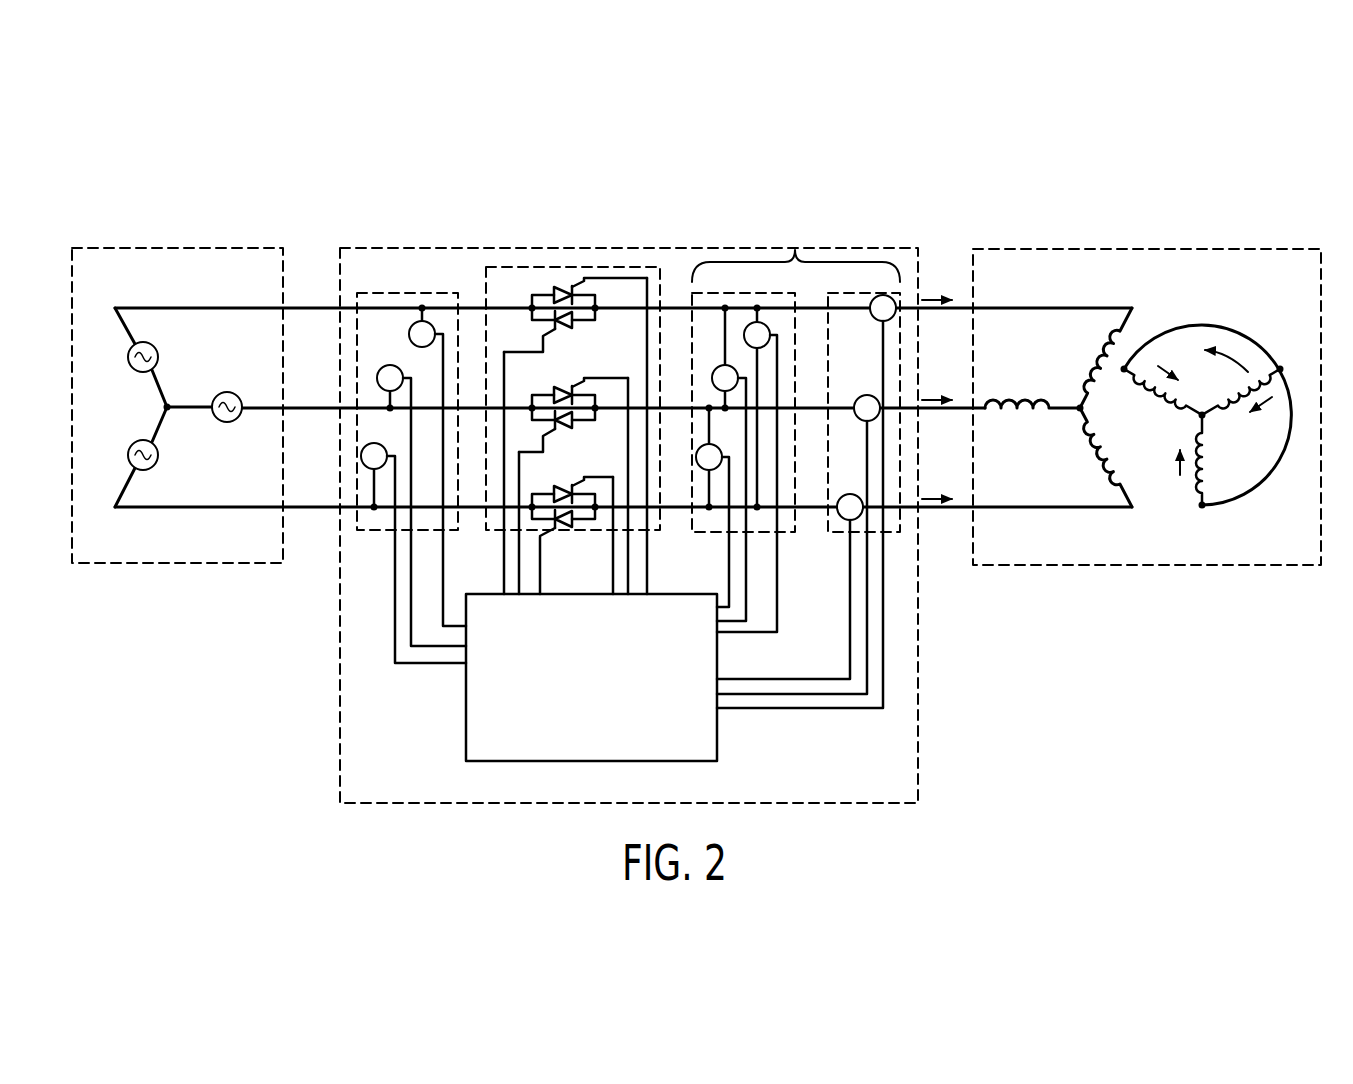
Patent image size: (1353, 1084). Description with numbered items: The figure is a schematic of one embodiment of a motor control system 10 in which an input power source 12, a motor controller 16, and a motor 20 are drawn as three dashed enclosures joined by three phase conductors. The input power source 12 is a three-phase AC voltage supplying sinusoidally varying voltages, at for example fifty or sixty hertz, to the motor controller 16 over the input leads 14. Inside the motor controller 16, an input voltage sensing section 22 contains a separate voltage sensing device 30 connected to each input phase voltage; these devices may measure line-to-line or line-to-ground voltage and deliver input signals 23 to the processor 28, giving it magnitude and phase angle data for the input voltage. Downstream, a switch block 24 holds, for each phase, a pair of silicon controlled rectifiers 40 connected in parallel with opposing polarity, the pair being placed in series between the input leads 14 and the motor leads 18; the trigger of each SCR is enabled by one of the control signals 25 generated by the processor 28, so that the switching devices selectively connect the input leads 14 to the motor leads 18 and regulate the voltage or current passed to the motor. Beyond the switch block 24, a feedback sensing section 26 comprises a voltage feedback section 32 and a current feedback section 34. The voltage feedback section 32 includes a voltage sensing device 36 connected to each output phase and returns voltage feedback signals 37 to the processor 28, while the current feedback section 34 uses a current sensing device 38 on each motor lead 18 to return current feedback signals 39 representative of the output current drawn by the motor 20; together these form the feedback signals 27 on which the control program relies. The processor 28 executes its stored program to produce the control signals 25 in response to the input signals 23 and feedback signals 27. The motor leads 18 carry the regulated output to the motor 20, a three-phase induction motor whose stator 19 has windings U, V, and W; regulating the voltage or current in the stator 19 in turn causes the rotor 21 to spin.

The motor control system 10 is at (128, 162).
The input power source 12 is at (182, 248).
The input leads 14 is at (301, 270).
The motor controller 16 is at (380, 248).
The motor leads 18 is at (938, 260).
The stator 19 is at (1012, 303).
The motor 20 is at (1147, 249).
The rotor 21 is at (1246, 328).
The input voltage sensing section 22 is at (405, 293).
The input signals 23 is at (390, 633).
The switch block 24 is at (567, 267).
The control signals 25 is at (606, 574).
The feedback sensing section 26 is at (795, 250).
The feedback signals 27 is at (843, 598).
The processor 28 is at (589, 763).
The voltage sensing device 30 is at (409, 337).
The voltage feedback section 32 is at (740, 293).
The current feedback section 34 is at (865, 293).
The voltage sensing device 36 is at (746, 327).
The voltage feedback signals 37 is at (738, 640).
The current sensing device 38 is at (870, 321).
The current feedback signals 39 is at (783, 719).
The silicon controlled rectifiers 40 is at (566, 336).